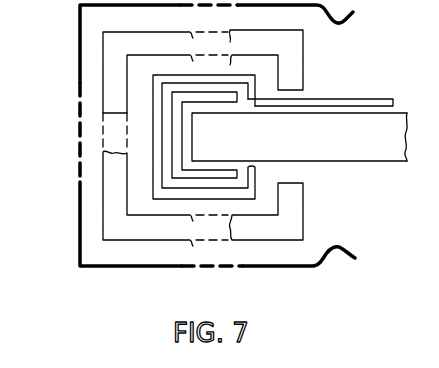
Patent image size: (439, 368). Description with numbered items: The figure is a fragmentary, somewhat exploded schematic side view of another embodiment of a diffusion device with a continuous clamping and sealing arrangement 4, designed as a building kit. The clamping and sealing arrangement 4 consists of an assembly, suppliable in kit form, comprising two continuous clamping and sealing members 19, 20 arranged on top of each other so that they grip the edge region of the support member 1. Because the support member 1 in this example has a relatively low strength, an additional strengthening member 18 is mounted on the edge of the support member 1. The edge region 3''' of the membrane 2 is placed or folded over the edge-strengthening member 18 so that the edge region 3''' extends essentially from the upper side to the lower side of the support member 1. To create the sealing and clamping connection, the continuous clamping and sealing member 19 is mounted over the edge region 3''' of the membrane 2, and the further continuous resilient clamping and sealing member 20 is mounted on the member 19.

The support member 1 is at (362, 153).
The membrane 2 is at (355, 103).
The edge region of the membrane 3''' is at (135, 137).
The clamping and sealing arrangement 4 is at (80, 52).
The strengthening member 18 is at (230, 175).
The continuous clamping and sealing member 19 is at (112, 173).
The further continuous resilient clamping and sealing member 20 is at (78, 230).